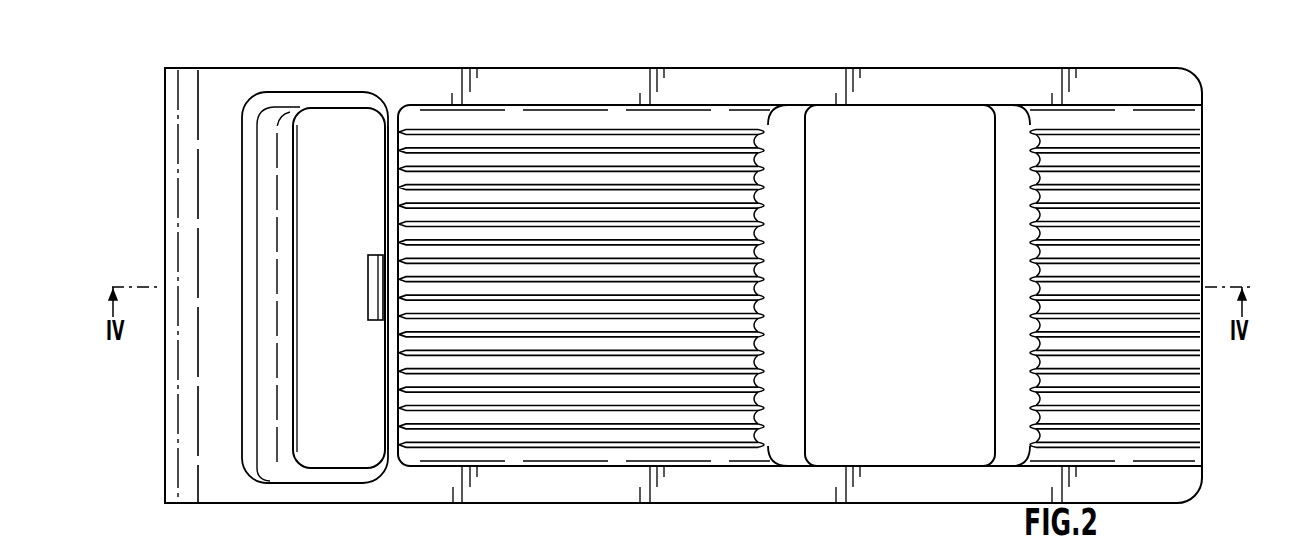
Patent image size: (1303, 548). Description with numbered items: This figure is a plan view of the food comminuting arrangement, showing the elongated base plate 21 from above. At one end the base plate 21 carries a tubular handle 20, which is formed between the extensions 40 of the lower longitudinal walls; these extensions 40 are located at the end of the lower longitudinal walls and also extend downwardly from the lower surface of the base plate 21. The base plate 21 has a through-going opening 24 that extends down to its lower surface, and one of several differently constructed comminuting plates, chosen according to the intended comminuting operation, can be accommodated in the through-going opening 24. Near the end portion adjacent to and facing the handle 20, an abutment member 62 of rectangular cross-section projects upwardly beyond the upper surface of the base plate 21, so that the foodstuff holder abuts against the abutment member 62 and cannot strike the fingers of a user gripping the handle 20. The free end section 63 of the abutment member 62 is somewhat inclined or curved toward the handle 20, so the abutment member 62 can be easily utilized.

The handle 20 is at (652, 120).
The base plate 21 is at (196, 482).
The through-going opening 24 is at (937, 122).
The extensions 40 is at (360, 97).
The abutment member 62 is at (378, 258).
The free end section 63 is at (372, 280).